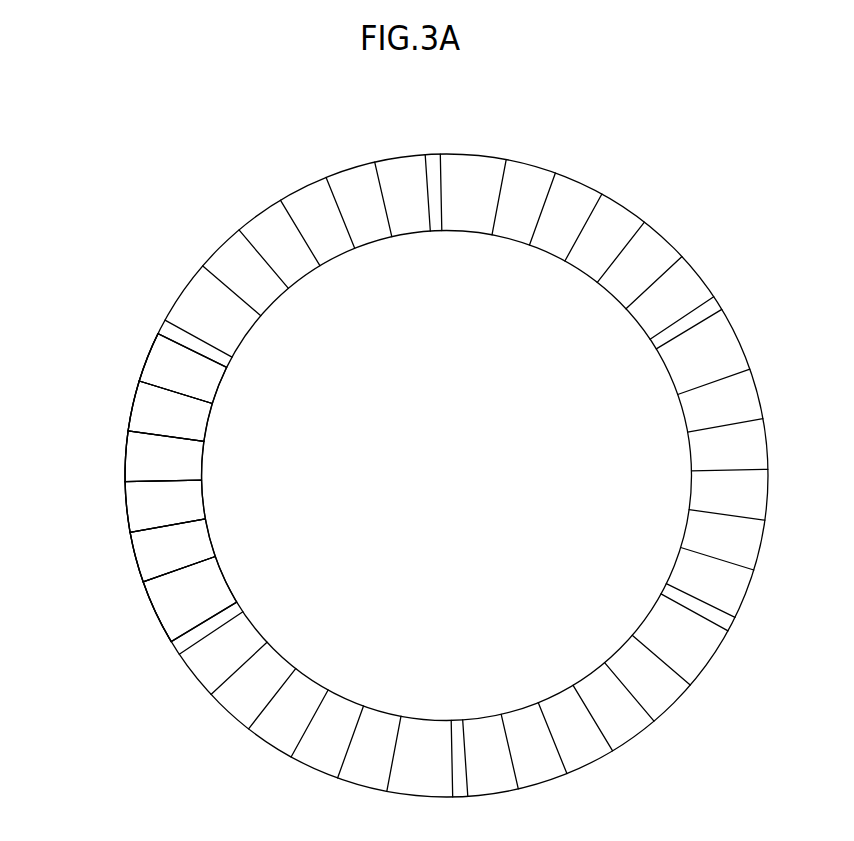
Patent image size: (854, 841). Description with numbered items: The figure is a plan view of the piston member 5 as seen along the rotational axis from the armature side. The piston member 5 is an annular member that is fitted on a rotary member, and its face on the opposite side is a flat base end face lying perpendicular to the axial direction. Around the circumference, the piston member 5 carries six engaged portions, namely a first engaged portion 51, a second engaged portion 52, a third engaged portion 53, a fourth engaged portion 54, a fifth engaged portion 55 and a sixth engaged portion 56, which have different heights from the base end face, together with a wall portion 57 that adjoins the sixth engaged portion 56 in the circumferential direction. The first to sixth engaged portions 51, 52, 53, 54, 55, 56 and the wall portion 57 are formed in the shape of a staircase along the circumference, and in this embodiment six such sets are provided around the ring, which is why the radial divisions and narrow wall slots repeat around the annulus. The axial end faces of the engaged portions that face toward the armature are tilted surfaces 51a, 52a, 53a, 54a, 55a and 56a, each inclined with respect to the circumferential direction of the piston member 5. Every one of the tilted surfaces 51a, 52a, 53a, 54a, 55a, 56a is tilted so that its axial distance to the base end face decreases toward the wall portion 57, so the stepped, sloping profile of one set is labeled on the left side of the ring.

The piston member 5 is at (211, 166).
The first engaged portion 51 is at (209, 584).
The second engaged portion 52 is at (196, 536).
The third engaged portion 53 is at (191, 498).
The fourth engaged portion 54 is at (191, 456).
The fifth engaged portion 55 is at (201, 416).
The sixth engaged portion 56 is at (209, 373).
The wall portion 57 is at (250, 351).
The tilted surface 51a is at (172, 603).
The tilted surface 52a is at (153, 553).
The tilted surface 53a is at (147, 508).
The tilted surface 54a is at (145, 462).
The tilted surface 55a is at (152, 415).
The tilted surface 56a is at (162, 368).